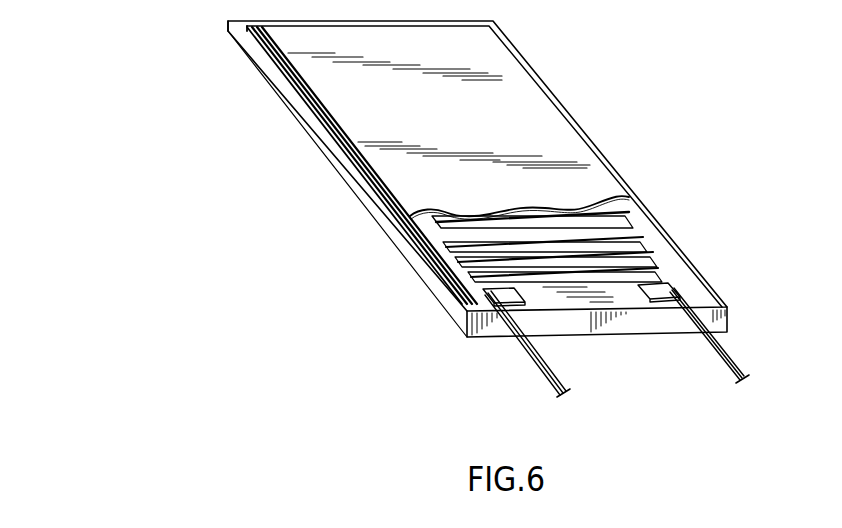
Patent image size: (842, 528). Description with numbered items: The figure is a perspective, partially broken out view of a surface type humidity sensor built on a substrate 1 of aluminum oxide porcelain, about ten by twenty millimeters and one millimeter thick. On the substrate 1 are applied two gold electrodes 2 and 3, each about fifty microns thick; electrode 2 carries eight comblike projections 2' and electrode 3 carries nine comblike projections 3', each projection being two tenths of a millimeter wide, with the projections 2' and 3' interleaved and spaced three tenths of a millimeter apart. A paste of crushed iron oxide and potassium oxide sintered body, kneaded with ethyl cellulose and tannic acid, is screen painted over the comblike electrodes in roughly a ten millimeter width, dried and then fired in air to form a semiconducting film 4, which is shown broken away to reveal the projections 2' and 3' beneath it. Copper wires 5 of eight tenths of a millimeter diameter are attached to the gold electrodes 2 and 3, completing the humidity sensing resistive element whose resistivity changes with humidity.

The substrate 1 is at (303, 129).
The gold electrode 2 is at (461, 316).
The comblike projections 2' is at (571, 215).
The gold electrode 3 is at (706, 284).
The comblike projections 3' is at (488, 279).
The semiconducting film 4 is at (545, 122).
The copper wires 5 is at (542, 375).